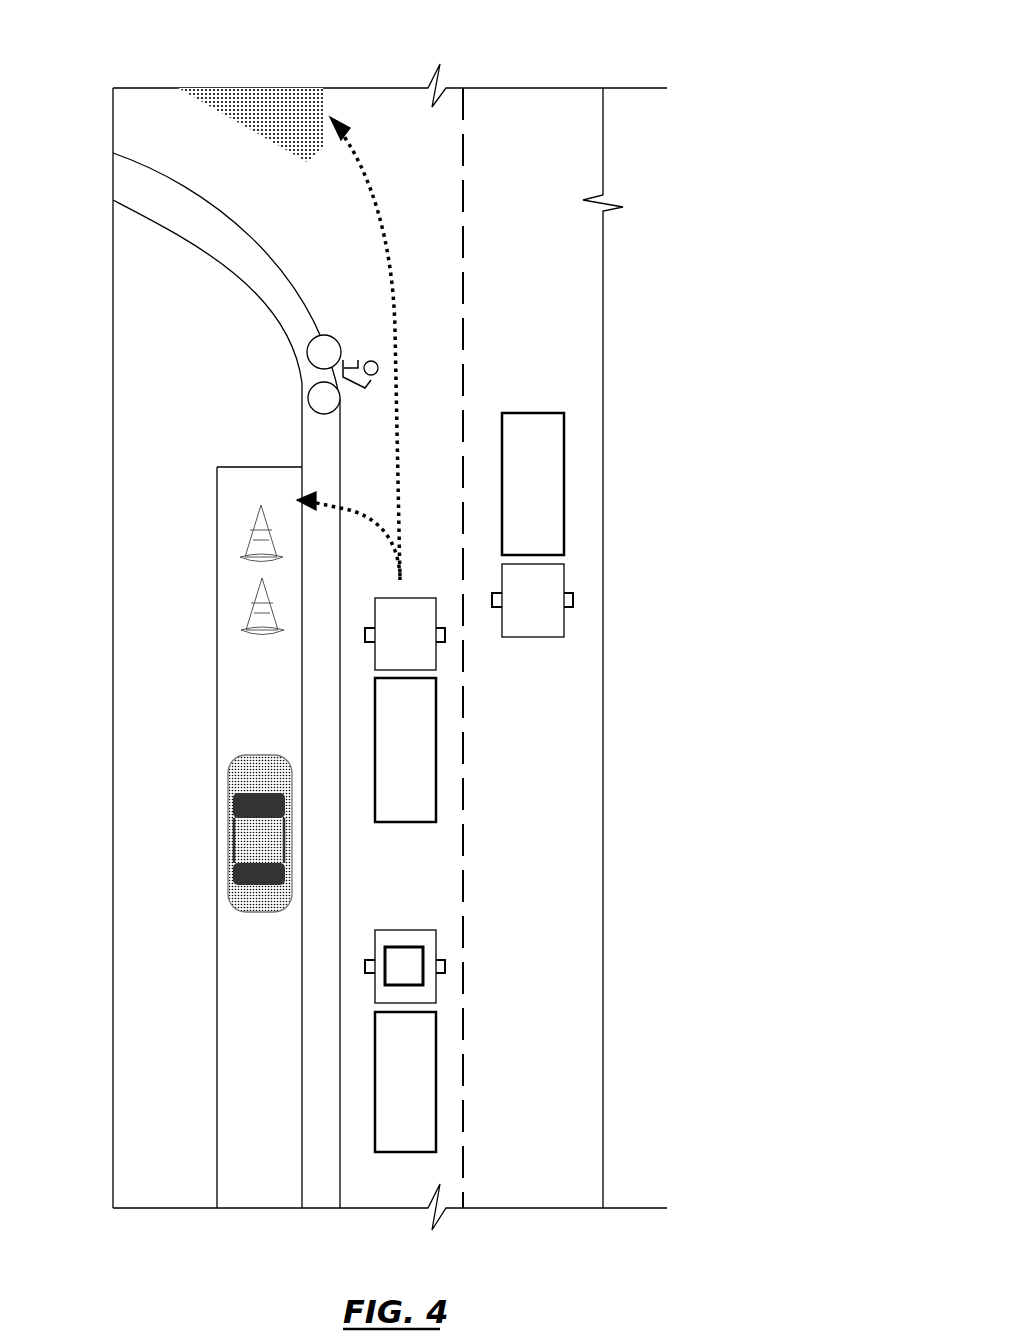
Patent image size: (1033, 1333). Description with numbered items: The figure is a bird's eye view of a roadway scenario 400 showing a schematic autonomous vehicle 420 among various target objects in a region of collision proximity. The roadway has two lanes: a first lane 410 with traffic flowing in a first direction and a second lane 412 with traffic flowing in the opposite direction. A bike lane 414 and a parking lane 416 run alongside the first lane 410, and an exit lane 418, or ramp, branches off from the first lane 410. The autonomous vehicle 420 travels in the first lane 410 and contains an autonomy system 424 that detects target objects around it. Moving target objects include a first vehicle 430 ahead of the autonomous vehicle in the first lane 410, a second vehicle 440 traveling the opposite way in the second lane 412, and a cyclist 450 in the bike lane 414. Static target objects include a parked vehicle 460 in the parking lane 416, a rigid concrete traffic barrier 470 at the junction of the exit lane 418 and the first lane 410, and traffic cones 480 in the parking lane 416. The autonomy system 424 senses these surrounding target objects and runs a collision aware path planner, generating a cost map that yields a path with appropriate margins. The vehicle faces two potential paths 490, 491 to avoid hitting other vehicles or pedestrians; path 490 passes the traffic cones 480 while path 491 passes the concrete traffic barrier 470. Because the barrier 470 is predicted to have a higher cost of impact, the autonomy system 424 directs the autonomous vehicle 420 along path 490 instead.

The roadway scenario 400 is at (707, 1115).
The first lane 410 is at (429, 894).
The second lane 412 is at (558, 357).
The bike lane 414 is at (293, 317).
The parking lane 416 is at (291, 1057).
The exit lane 418 is at (291, 212).
The autonomous vehicle 420 is at (436, 1130).
The autonomy system 424 is at (415, 965).
The first vehicle 430 is at (436, 795).
The second vehicle 440 is at (560, 627).
The cyclist 450 is at (300, 398).
The parked vehicle 460 is at (252, 912).
The rigid concrete traffic barrier 470 is at (322, 117).
The traffic cones 480 is at (255, 533).
The path 490 is at (302, 480).
The path 491 is at (382, 250).